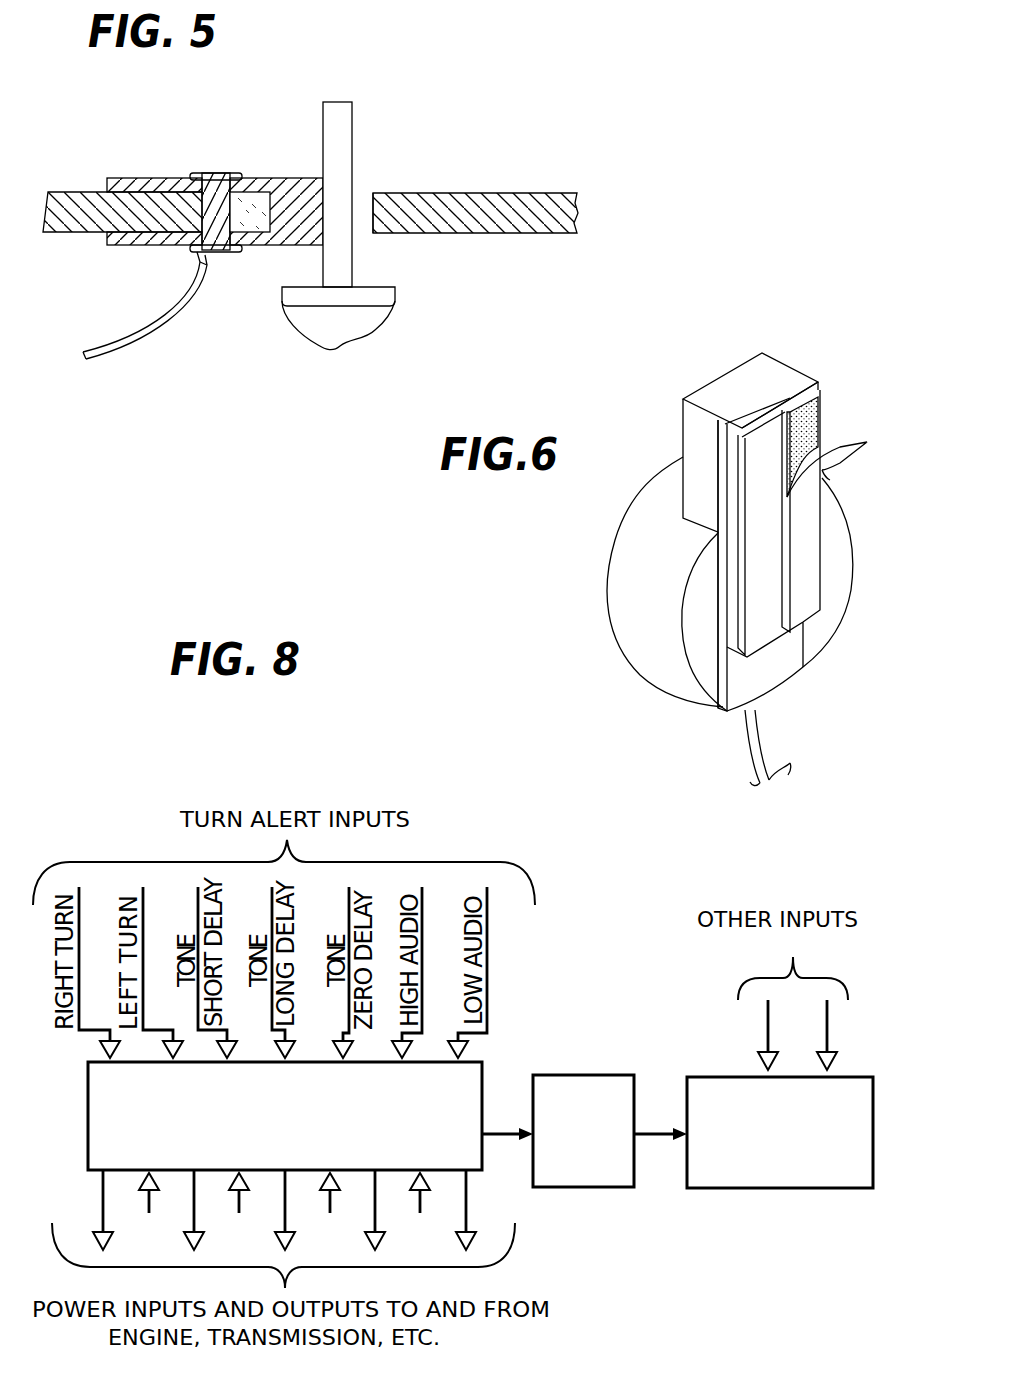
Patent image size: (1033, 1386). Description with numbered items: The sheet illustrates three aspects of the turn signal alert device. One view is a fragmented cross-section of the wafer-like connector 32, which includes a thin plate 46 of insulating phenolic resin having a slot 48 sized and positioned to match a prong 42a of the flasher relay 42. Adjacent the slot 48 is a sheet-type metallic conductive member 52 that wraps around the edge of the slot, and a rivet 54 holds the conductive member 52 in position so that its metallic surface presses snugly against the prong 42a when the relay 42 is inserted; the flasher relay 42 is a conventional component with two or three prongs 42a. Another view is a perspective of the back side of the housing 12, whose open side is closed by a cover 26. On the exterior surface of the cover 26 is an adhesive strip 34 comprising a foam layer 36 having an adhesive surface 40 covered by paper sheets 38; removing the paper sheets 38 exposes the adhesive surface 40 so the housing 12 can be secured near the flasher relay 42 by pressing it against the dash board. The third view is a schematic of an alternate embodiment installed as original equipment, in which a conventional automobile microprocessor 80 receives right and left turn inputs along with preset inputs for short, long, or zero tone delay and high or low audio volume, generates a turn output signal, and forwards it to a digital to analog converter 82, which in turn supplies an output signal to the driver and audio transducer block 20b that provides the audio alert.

In FIG. 5, the wafer-like connector 32 is at (124, 163).
In FIG. 5, the rivet 54 is at (222, 173).
In FIG. 5, the conductive member 52 is at (310, 177).
In FIG. 5, the prong 42a is at (340, 106).
In FIG. 5, the slot 48 is at (363, 205).
In FIG. 5, the plate 46 is at (500, 233).
In FIG. 5, the flasher relay 42 is at (375, 312).
In FIG. 6, the adhesive strip 34 is at (812, 650).
In FIG. 6, the housing 12 is at (752, 376).
In FIG. 6, the cover 26 is at (722, 460).
In FIG. 6, the foam layer 36 is at (792, 395).
In FIG. 6, the paper sheets 38 is at (808, 603).
In FIG. 6, the adhesive surface 40 is at (812, 427).
In FIG. 8, the microprocessor 80 is at (102, 1123).
In FIG. 8, the digital to analog converter 82 is at (602, 1073).
In FIG. 8, the driver and audio transducer 20b is at (728, 1073).